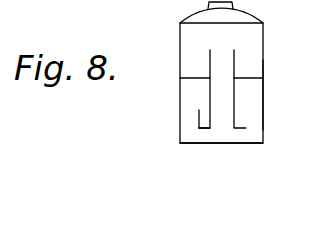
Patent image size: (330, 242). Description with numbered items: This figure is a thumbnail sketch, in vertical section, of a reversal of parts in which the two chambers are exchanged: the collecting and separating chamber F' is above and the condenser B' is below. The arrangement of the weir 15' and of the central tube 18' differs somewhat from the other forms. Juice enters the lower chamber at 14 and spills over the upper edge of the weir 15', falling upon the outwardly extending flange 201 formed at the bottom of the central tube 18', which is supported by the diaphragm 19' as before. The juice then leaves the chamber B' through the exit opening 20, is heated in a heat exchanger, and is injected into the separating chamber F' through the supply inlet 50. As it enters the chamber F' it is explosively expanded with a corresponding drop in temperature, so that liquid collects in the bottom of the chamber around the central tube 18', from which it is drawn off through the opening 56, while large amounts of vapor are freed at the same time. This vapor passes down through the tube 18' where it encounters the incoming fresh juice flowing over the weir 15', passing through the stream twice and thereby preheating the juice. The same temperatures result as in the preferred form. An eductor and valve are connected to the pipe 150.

The condenser B' is at (242, 83).
The collecting and separating chamber F' is at (195, 20).
The supply inlet 50 is at (263, 29).
The central tube 18' is at (168, 79).
The diaphragm 19' is at (274, 79).
The opening 56 is at (177, 75).
The pipe 150 is at (266, 78).
The juice inlet 14 is at (266, 96).
The weir 15' is at (165, 108).
The outwardly extending flange 201 is at (198, 128).
The exit opening 20 is at (179, 141).